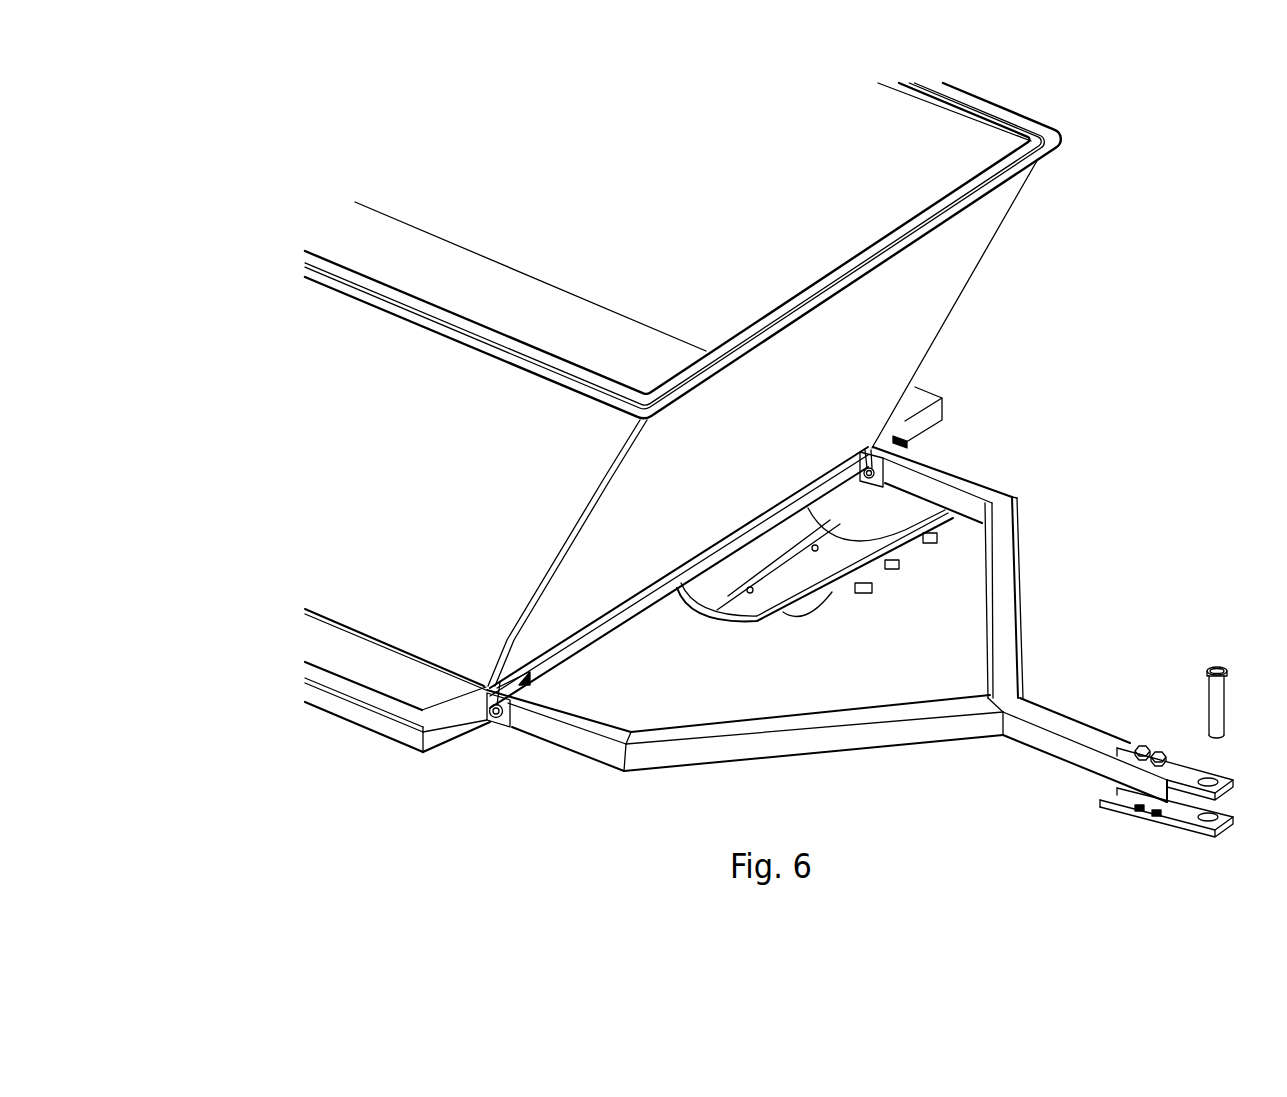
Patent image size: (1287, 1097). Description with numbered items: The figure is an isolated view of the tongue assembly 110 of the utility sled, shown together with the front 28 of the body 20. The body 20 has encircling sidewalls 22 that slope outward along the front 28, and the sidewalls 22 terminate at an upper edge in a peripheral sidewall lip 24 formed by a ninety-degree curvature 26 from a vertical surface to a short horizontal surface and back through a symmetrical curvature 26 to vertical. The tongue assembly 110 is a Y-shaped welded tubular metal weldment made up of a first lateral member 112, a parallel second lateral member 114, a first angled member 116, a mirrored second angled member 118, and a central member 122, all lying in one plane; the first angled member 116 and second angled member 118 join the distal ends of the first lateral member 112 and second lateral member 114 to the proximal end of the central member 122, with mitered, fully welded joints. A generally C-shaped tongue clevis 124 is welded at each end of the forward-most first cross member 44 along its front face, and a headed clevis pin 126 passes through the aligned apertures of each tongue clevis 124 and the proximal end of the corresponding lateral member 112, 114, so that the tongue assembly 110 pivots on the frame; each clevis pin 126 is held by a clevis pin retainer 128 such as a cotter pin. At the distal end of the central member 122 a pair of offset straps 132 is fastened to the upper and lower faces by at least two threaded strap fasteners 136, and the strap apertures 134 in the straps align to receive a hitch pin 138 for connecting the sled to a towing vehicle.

The body 20 is at (1066, 247).
The sidewalls 22 is at (352, 418).
The sidewall lip 24 is at (782, 318).
The curvature 26 is at (913, 243).
The front 28 is at (648, 557).
The first cross member 44 is at (611, 622).
The tongue assembly 110 is at (1108, 622).
The first lateral member 112 is at (975, 492).
The second lateral member 114 is at (578, 745).
The first angled member 116 is at (1003, 530).
The second angled member 118 is at (805, 735).
The central member 122 is at (1038, 728).
The tongue clevis 124 is at (502, 727).
The clevis pin 126 is at (490, 722).
The clevis pin retainer 128 is at (533, 678).
The offset straps 132 is at (1187, 770).
The strap apertures 134 is at (1221, 785).
The strap fasteners 136 is at (1157, 747).
The hitch pin 138 is at (1206, 670).